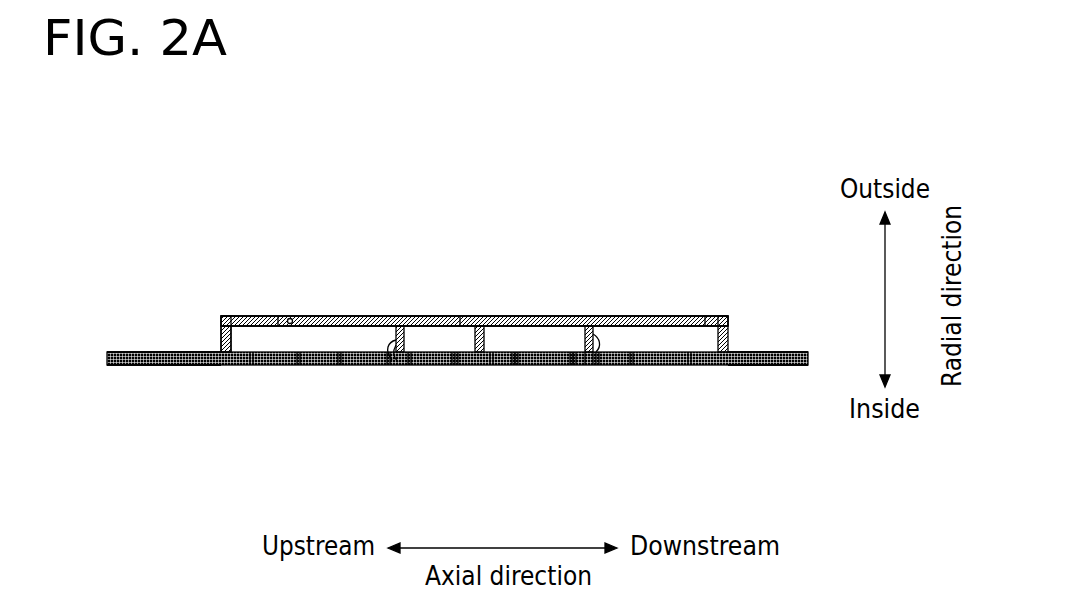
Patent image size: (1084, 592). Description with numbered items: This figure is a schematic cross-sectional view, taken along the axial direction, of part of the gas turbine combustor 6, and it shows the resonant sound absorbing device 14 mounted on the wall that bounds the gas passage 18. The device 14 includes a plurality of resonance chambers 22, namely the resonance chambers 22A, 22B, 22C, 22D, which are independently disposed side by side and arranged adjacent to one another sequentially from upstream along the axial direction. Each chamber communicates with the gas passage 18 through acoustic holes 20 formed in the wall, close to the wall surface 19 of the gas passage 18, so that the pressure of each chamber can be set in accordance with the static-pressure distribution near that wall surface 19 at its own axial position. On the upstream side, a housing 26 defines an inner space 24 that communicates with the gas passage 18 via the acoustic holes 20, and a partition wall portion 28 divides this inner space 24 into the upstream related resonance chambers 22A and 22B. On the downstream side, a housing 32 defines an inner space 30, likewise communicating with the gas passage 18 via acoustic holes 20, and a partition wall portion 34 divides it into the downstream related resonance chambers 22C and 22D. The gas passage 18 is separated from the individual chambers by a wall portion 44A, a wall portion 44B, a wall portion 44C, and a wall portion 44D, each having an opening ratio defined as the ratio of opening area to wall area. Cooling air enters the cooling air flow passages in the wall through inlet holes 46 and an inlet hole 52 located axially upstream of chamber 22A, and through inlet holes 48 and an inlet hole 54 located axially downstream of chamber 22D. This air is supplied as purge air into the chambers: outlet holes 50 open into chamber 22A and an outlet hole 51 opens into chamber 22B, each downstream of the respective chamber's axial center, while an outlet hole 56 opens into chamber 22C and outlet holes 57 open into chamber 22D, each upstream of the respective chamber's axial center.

The gas turbine combustor 6 is at (598, 136).
The resonant sound absorbing device 14 is at (306, 195).
The gas passage 18 is at (232, 430).
The wall surface 19 is at (489, 366).
The acoustic holes 20 is at (340, 366).
The resonance chambers 22 is at (457, 263).
The upstream related resonance chamber 22A is at (276, 314).
The upstream related resonance chamber 22B is at (447, 314).
The downstream related resonance chamber 22C is at (517, 314).
The downstream related resonance chamber 22D is at (648, 314).
The inner space 24 is at (413, 312).
The housing 26 is at (317, 314).
The partition wall portion 28 is at (402, 366).
The inner space 30 is at (612, 312).
The housing 32 is at (685, 312).
The partition wall portion 34 is at (588, 366).
The wall portion 44A is at (307, 366).
The wall portion 44B is at (463, 366).
The wall portion 44C is at (503, 366).
The wall portion 44D is at (702, 366).
The inlet holes 46 is at (127, 351).
The inlet holes 48 is at (781, 351).
The outlet holes 50 is at (372, 366).
The outlet hole 51 is at (443, 366).
The inlet hole 52 is at (143, 351).
The inlet hole 54 is at (768, 358).
The outlet hole 56 is at (525, 366).
The outlet holes 57 is at (613, 366).